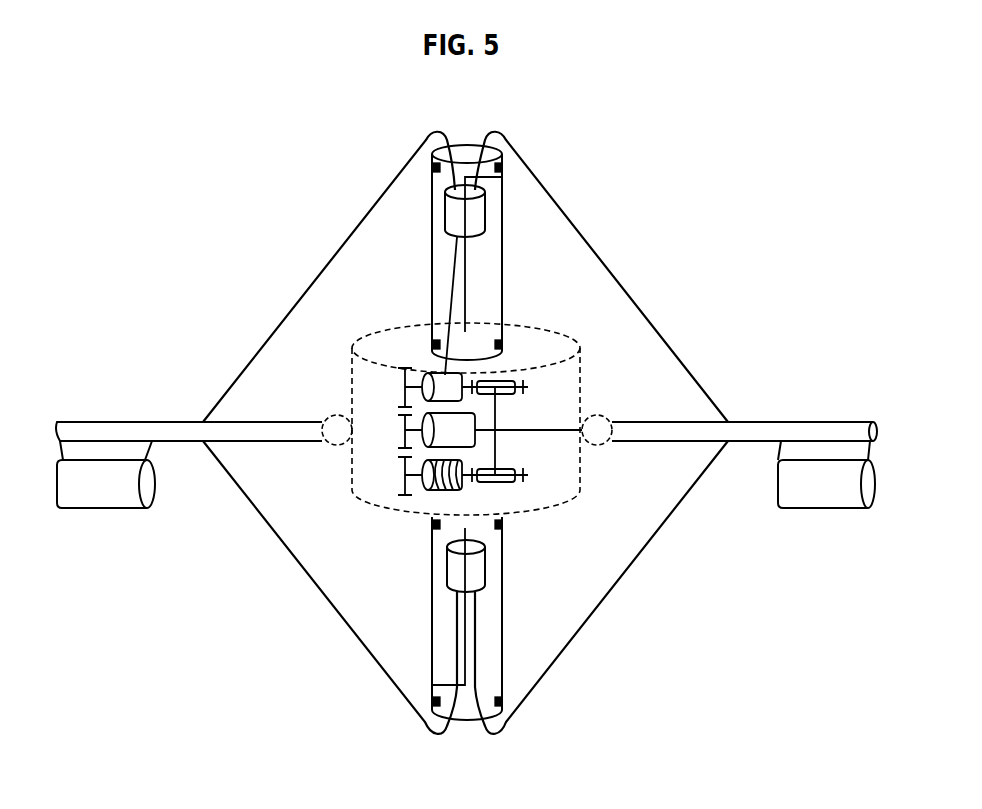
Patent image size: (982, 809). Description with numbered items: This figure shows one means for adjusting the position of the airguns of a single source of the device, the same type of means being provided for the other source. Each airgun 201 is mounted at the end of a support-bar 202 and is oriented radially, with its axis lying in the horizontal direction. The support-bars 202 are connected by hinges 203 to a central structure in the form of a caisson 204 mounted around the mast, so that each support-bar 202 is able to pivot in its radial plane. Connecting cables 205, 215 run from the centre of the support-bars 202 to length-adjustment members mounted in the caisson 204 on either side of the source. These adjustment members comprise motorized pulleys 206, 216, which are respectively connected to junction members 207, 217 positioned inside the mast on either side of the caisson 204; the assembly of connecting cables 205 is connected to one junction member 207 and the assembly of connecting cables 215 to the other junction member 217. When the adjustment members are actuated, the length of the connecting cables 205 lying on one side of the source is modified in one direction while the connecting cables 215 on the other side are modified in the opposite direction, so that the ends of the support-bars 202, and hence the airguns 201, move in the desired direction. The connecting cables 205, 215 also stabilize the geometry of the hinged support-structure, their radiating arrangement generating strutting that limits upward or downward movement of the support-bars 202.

The airgun 201 is at (105, 495).
The support-bar 202 is at (118, 430).
The hinge 203 is at (335, 432).
The caisson 204 is at (363, 488).
The connecting cable 205 is at (305, 575).
The motorized pulley 206 is at (458, 483).
The junction member 207 is at (475, 572).
The connecting cable 215 is at (307, 285).
The motorized pulley 216 is at (447, 376).
The junction member 217 is at (475, 213).